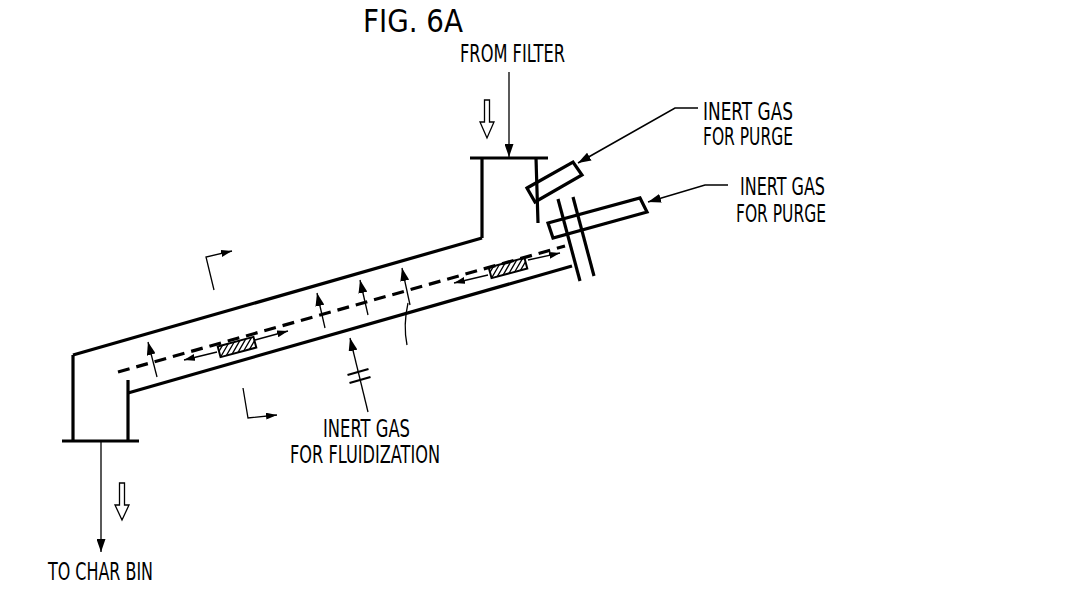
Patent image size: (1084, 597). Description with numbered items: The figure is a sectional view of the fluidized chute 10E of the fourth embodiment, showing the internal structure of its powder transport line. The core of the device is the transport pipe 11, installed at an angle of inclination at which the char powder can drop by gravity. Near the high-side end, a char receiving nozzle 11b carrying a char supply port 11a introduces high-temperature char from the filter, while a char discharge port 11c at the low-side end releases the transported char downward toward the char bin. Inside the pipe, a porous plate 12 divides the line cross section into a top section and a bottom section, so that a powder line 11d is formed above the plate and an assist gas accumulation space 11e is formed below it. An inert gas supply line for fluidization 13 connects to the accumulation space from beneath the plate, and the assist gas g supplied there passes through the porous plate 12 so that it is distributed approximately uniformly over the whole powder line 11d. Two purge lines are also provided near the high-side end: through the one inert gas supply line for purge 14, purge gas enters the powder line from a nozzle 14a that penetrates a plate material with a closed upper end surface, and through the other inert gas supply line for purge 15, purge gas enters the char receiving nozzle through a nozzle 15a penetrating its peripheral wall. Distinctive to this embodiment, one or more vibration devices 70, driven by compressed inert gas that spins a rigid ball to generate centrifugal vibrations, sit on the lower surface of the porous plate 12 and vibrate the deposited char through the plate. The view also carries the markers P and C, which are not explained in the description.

The fluidized chute 10E is at (314, 173).
The transport pipe 11 is at (331, 276).
The char supply port 11a is at (535, 157).
The char receiving nozzle 11b is at (482, 181).
The char discharge port 11c is at (82, 442).
The powder line 11d is at (272, 305).
The assist gas accumulation space 11e is at (445, 293).
The porous plate 12 is at (425, 283).
The inert gas supply line for fluidization 13 is at (367, 398).
The inert gas supply line for purge 14 is at (690, 193).
The nozzle 14a is at (632, 222).
The inert gas supply line for purge 15 is at (656, 118).
The nozzle 15a is at (568, 160).
The vibration device 70 is at (225, 360).
The assist gas g is at (404, 335).
The pressure P is at (483, 113).
The section line C is at (232, 342).